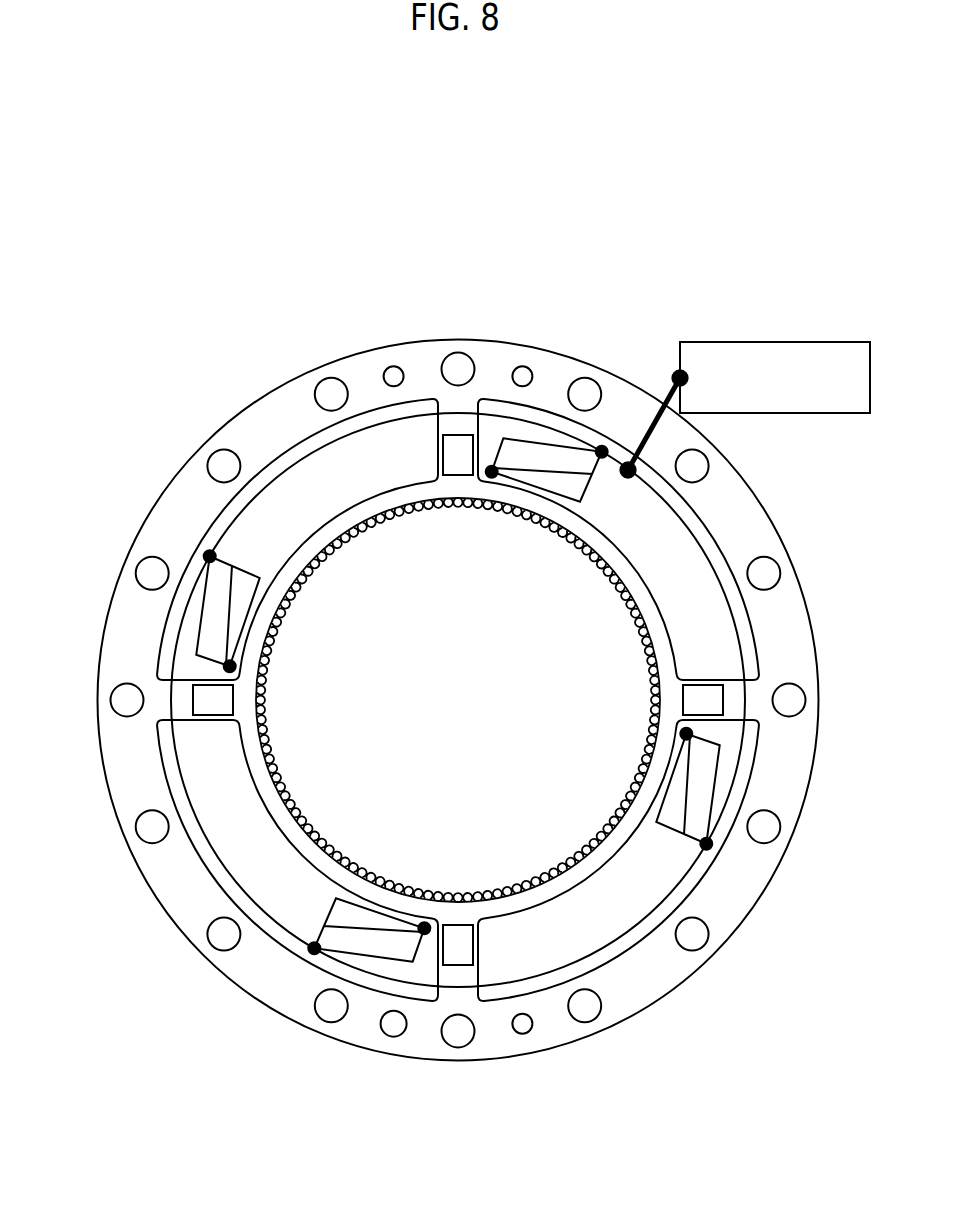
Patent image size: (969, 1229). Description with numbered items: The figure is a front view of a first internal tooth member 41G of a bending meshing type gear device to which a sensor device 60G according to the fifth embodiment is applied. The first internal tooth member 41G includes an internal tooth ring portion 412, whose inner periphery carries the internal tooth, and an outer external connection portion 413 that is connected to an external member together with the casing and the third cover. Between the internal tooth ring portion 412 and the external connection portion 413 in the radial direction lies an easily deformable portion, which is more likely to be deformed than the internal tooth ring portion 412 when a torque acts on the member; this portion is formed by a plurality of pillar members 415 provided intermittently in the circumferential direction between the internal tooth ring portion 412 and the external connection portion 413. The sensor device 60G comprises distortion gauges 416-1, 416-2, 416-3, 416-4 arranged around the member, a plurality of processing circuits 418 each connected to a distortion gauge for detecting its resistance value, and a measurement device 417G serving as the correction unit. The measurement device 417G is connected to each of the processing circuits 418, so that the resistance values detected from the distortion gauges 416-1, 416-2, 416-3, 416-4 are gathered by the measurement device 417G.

The first internal tooth member 41G is at (160, 304).
The external connection portion 413 is at (172, 505).
The internal tooth ring portion 412 is at (278, 807).
The pillar member 415 is at (437, 455).
The distortion gauge 416-1 is at (723, 700).
The distortion gauge 416-2 is at (458, 965).
The distortion gauge 416-3 is at (193, 695).
The distortion gauge 416-4 is at (458, 445).
The processing circuit 418 is at (553, 457).
The sensor device 60G is at (880, 293).
The measurement device 417G is at (797, 341).